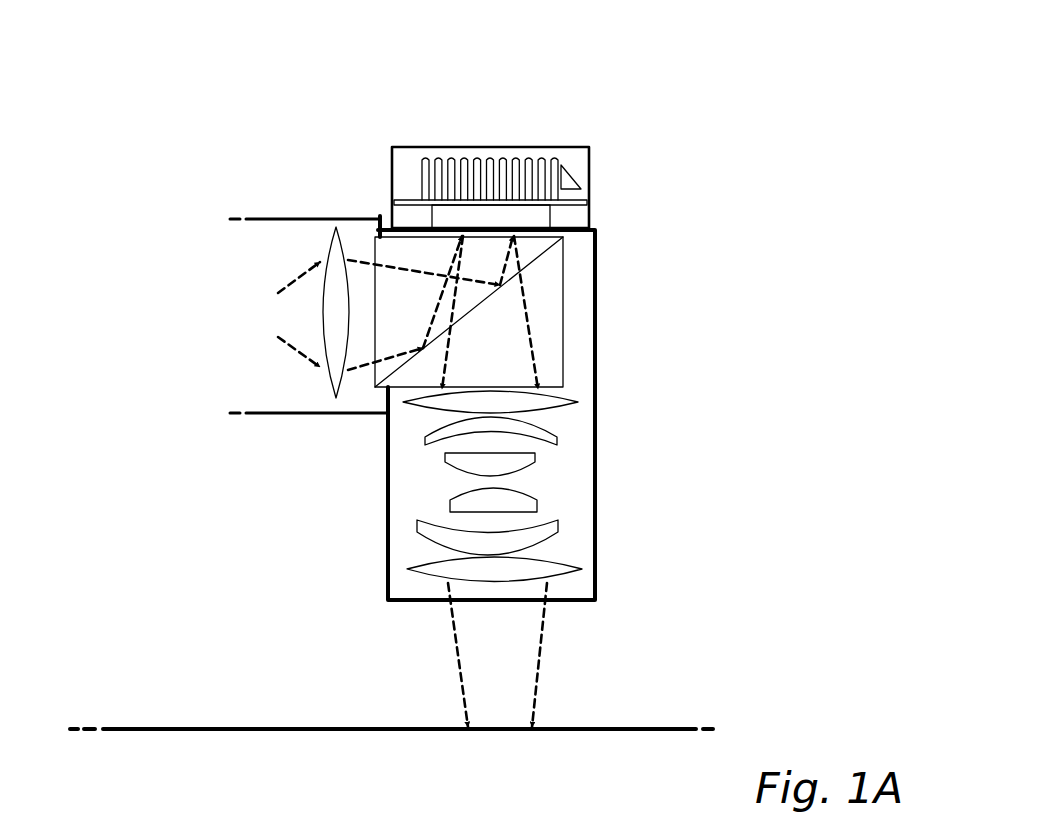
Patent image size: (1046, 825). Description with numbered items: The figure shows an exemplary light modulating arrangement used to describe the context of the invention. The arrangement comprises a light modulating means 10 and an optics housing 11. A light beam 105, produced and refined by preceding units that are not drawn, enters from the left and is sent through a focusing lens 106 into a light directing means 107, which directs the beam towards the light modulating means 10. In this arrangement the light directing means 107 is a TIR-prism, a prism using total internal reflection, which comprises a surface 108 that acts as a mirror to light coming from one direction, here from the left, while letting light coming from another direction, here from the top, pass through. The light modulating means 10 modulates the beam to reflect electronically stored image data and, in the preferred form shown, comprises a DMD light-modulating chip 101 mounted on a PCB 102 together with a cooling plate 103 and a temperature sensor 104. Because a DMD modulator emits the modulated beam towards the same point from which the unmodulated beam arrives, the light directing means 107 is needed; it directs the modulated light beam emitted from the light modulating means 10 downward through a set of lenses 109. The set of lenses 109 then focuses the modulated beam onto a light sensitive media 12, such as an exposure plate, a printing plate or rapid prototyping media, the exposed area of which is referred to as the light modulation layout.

The light modulating means 10 is at (523, 147).
The optics housing 11 is at (386, 468).
The light sensitive media 12 is at (177, 728).
The DMD light-modulating chip 101 is at (410, 218).
The PCB 102 is at (406, 200).
The cooling plate 103 is at (486, 158).
The temperature sensor 104 is at (590, 172).
The light beam 105 is at (246, 313).
The focusing lens 106 is at (327, 248).
The light directing means 107 is at (563, 354).
The surface 108 is at (563, 276).
The set of lenses 109 is at (582, 509).